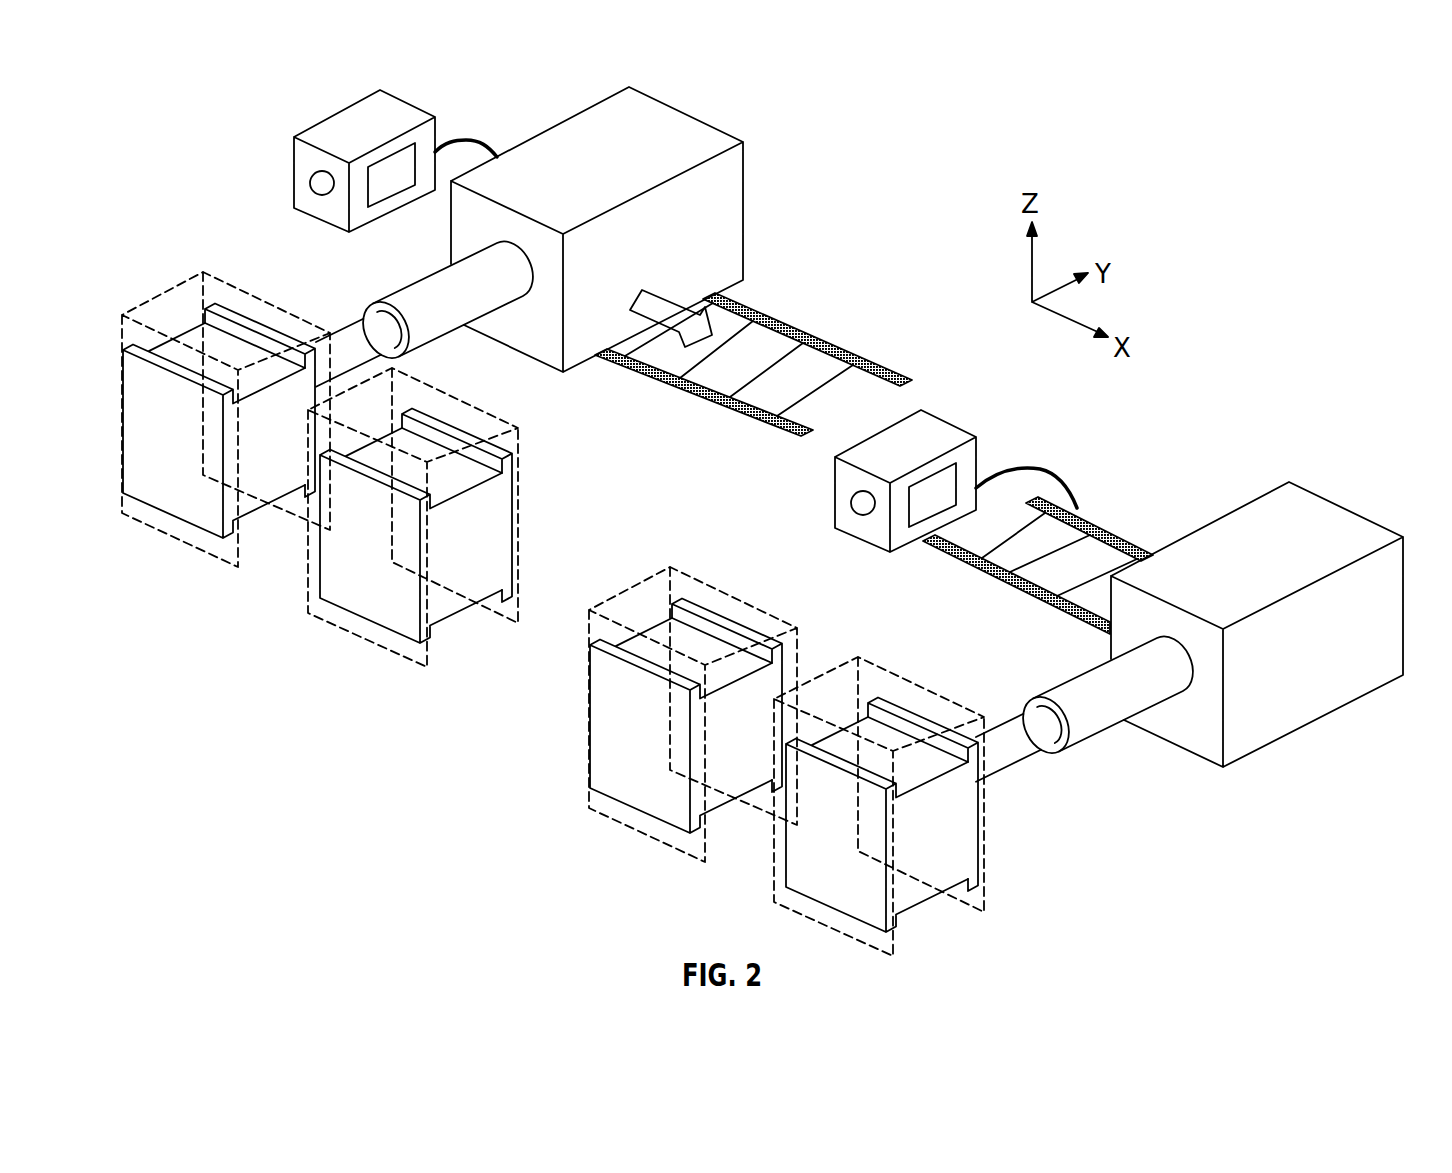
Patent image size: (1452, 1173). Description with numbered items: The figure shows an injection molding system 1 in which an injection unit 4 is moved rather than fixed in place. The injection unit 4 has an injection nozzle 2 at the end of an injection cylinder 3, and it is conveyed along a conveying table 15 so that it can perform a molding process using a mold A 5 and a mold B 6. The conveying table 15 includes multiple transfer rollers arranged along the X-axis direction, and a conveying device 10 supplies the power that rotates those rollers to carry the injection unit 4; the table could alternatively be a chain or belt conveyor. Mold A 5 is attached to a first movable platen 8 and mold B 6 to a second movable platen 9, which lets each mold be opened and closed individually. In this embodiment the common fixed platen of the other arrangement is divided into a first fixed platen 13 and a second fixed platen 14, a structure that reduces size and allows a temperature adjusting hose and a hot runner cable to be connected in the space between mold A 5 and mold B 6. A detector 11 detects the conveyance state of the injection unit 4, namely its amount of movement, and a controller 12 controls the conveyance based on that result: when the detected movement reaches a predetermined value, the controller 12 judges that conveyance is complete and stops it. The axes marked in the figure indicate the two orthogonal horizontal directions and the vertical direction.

The injection molding system 1 is at (951, 426).
The injection nozzle 2 is at (356, 342).
The injection cylinder 3 is at (412, 302).
The injection unit 4 is at (549, 148).
The mold A 5 is at (243, 311).
The mold B 6 is at (454, 418).
The first movable platen 8 is at (166, 535).
The second movable platen 9 is at (352, 636).
The conveying device 10 is at (331, 126).
The detector 11 is at (310, 183).
The controller 12 is at (410, 188).
The first fixed platen 13 is at (206, 303).
The second fixed platen 14 is at (520, 479).
The conveying table 15 is at (800, 331).